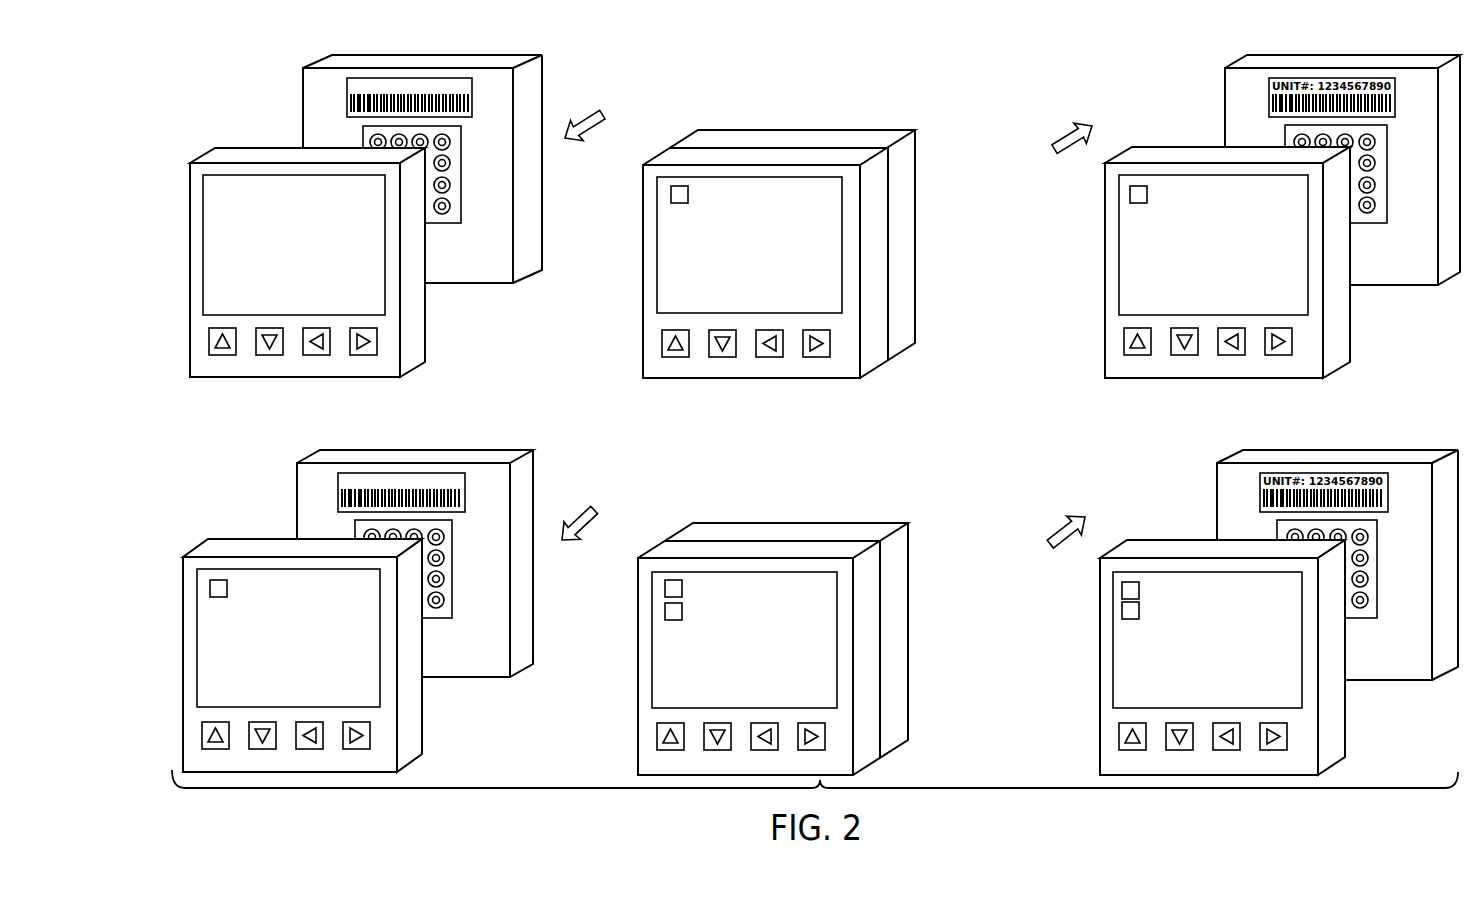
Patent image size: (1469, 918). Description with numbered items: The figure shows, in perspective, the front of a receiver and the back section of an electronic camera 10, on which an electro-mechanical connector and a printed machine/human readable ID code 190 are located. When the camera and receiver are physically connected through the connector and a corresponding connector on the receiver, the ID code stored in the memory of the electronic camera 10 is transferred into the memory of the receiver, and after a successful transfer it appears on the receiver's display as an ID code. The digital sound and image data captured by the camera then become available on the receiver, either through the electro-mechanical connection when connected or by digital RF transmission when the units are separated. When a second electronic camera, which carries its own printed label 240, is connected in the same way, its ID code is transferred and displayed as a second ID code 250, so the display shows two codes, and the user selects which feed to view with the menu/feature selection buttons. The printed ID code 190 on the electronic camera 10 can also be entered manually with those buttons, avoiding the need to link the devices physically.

The electronic camera 10 is at (467, 163).
The printed machine/human readable ID code 190 is at (473, 79).
The second identification label 240 is at (457, 473).
The ID code 250 is at (664, 613).